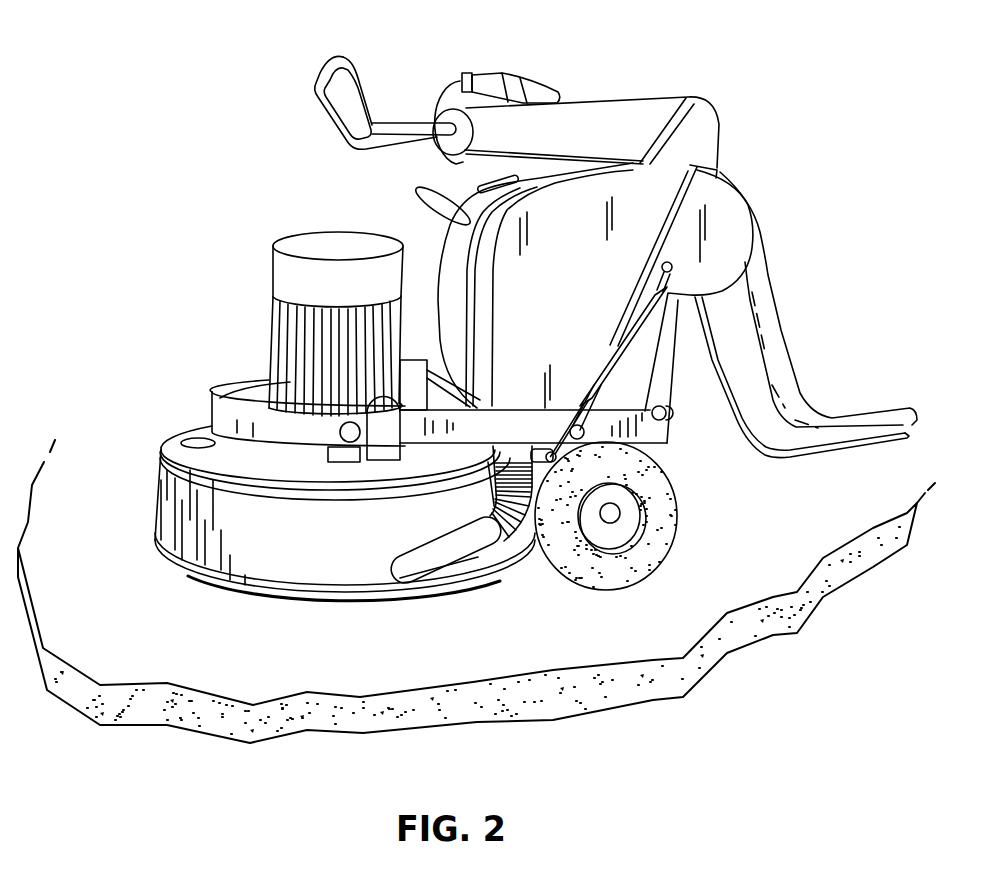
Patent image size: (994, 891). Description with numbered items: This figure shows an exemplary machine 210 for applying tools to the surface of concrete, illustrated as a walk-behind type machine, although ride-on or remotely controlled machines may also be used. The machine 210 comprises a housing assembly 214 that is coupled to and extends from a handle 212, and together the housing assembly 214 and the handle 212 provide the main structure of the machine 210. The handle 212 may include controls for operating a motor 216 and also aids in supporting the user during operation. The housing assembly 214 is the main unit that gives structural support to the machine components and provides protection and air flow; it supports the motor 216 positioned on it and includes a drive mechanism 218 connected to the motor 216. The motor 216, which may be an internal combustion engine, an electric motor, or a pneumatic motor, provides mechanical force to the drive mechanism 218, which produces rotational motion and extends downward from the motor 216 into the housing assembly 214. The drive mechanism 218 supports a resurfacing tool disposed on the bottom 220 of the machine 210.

The machine 210 is at (261, 186).
The handle 212 is at (367, 90).
The housing assembly 214 is at (583, 306).
The motor 216 is at (283, 273).
The drive mechanism 218 is at (233, 600).
The bottom 220 is at (339, 629).